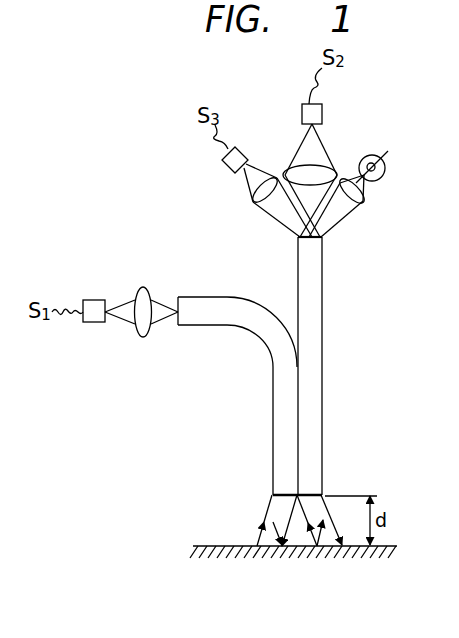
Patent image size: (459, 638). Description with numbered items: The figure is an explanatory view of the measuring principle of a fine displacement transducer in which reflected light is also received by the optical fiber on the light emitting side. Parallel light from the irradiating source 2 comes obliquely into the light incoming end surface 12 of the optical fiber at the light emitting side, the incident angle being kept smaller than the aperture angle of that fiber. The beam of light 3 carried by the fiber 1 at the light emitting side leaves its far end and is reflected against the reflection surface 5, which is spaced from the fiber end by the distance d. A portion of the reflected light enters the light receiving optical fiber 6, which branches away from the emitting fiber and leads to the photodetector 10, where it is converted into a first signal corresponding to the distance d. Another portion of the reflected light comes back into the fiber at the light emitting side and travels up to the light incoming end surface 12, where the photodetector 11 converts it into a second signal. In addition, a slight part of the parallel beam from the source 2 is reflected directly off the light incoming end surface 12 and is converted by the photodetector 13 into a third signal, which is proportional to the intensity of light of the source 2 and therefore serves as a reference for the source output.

The illuminating fiber 1 is at (322, 348).
The light source 2 is at (385, 172).
The illuminating light beam 3 is at (333, 494).
The reflection surface 5 is at (215, 546).
The light receiving optical fiber 6 is at (272, 405).
The photodetector 10 is at (93, 300).
The photodetector 11 is at (322, 113).
The light incoming end surface 12 is at (323, 247).
The photodetector 13 is at (245, 150).